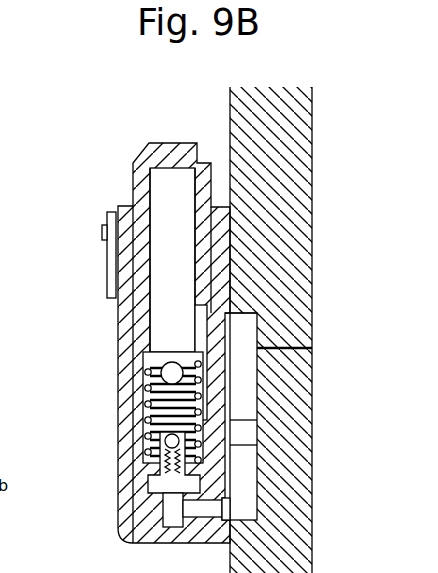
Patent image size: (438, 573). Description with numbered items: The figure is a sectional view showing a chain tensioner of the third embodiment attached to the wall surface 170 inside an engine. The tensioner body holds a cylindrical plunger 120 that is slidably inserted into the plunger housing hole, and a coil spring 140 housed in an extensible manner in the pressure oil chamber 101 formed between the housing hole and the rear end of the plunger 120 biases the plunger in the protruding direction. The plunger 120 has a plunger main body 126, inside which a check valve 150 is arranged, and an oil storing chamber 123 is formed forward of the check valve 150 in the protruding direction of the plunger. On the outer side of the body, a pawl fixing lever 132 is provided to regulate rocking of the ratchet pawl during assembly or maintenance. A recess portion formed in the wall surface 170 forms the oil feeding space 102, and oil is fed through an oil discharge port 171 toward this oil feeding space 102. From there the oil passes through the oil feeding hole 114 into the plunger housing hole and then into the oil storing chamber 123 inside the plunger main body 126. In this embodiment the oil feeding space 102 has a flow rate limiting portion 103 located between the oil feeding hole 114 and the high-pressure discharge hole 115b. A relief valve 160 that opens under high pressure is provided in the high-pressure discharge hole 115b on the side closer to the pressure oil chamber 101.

The wall surface 170 is at (229, 142).
The oil feeding space 102 is at (243, 432).
The oil discharge port 171 is at (298, 347).
The flow rate limiting portion 103 is at (261, 449).
The oil feeding hole 114 is at (233, 311).
The plunger 120 is at (49, 270).
The pawl fixing lever 132 is at (110, 258).
The plunger main body 126 is at (171, 286).
The oil storing chamber 123 is at (152, 302).
The check valve 150 is at (150, 352).
The coil spring 140 is at (145, 408).
The pressure oil chamber 101 is at (160, 385).
The relief valve 160 is at (163, 446).
The high-pressure discharge hole 115b is at (208, 507).